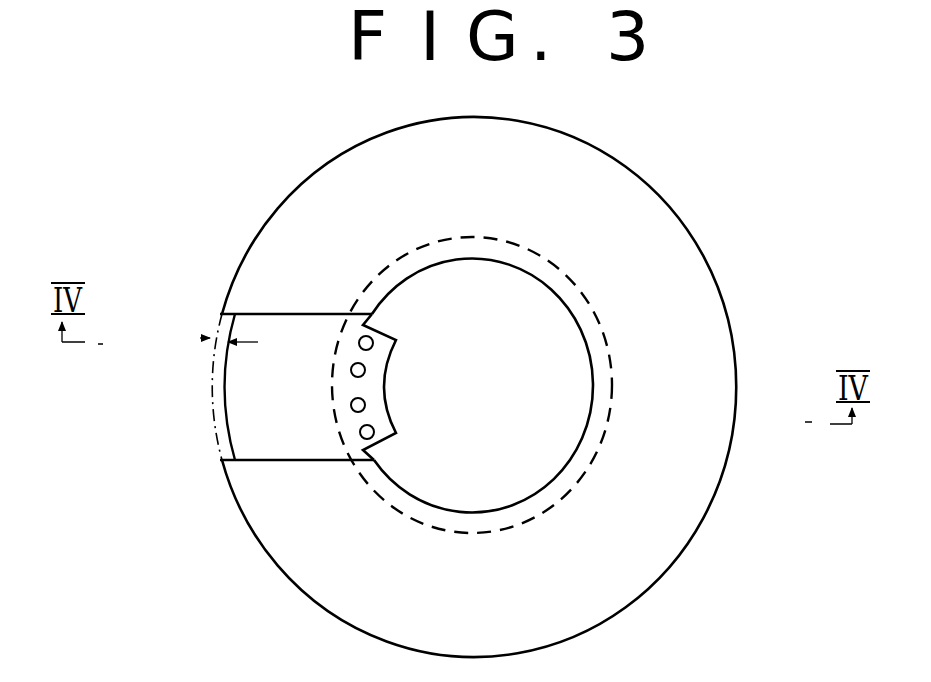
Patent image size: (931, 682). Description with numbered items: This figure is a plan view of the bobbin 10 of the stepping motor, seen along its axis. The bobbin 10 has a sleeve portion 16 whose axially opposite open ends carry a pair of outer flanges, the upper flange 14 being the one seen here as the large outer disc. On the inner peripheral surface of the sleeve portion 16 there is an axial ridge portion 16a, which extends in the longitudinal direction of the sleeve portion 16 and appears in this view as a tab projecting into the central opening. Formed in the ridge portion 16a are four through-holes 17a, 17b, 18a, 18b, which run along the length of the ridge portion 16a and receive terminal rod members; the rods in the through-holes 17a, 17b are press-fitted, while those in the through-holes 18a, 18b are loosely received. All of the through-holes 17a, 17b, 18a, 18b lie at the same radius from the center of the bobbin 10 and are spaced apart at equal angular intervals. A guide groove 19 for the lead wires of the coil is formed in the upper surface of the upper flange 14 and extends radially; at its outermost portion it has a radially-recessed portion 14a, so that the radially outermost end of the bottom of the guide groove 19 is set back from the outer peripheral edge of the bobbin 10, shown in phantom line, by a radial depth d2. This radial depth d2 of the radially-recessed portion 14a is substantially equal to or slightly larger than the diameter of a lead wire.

The bobbin 10 is at (679, 211).
The upper flange 14 is at (638, 575).
The radially-recessed portion 14a is at (215, 404).
The sleeve portion 16 is at (603, 433).
The ridge portion 16a is at (387, 369).
The through-hole 17a is at (360, 338).
The through-hole 17b is at (351, 366).
The through-hole 18a is at (352, 411).
The through-hole 18b is at (360, 438).
The guide groove 19 is at (245, 437).
The radial depth d2 is at (200, 338).